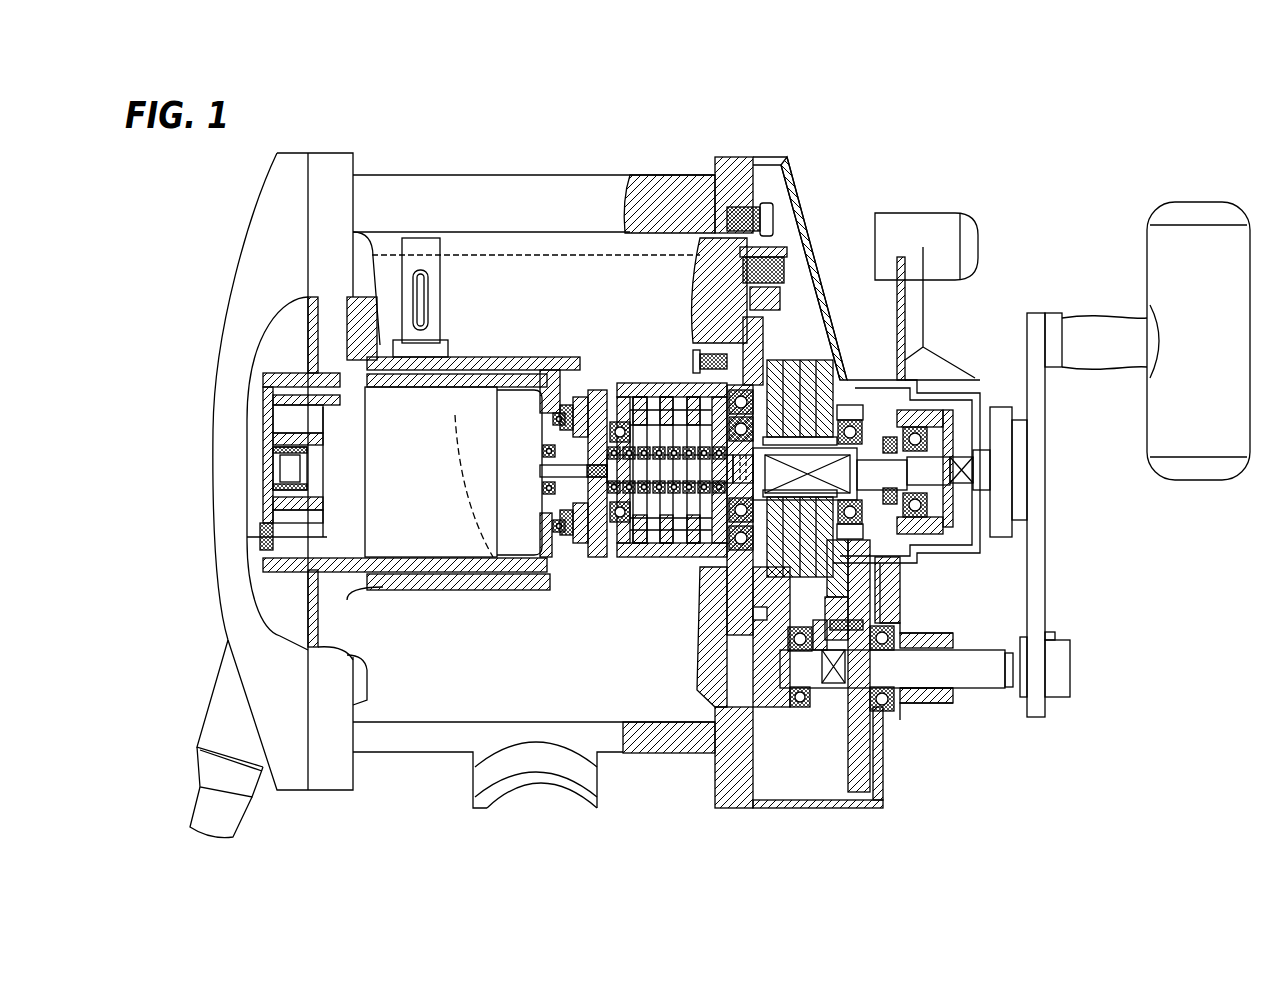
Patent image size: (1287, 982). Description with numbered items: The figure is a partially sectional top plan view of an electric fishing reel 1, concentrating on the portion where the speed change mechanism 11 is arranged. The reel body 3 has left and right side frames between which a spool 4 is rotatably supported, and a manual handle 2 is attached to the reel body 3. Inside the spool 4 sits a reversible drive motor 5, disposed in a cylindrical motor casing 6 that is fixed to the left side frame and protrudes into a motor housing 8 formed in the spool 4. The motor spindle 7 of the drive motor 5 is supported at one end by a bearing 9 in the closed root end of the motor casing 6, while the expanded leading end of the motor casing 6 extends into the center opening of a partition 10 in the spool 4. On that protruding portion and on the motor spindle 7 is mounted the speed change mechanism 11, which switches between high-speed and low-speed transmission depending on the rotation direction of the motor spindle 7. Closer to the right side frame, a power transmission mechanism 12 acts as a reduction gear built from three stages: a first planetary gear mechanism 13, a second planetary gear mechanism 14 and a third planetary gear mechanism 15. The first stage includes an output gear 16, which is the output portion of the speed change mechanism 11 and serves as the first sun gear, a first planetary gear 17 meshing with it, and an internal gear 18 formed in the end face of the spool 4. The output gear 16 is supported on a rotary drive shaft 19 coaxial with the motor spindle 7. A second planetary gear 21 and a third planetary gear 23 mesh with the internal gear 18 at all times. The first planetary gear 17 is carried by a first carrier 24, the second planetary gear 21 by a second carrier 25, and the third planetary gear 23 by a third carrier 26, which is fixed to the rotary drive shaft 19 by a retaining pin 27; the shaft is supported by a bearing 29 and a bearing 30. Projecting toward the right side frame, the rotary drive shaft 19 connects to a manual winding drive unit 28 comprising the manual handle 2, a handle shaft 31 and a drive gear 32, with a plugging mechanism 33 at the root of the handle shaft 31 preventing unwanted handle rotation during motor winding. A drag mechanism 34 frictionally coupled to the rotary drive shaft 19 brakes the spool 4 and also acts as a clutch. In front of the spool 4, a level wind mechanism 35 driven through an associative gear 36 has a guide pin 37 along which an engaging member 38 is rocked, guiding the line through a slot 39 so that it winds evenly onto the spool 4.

The electric fishing reel 1 is at (810, 162).
The manual handle 2 is at (1097, 372).
The reel body 3 is at (730, 155).
The spool 4 is at (525, 360).
The drive motor 5 is at (455, 400).
The motor casing 6 is at (428, 565).
The motor spindle 7 is at (272, 488).
The motor housing 8 is at (455, 588).
The bearing 9 is at (272, 448).
The partition 10 is at (573, 393).
The speed change mechanism 11 is at (570, 570).
The power transmission mechanism 12 is at (805, 383).
The first planetary gear mechanism 13 is at (615, 560).
The second planetary gear mechanism 14 is at (655, 556).
The third planetary gear mechanism 15 is at (693, 553).
The output gear 16 is at (590, 565).
The first planetary gear 17 is at (645, 393).
The internal gear 18 is at (747, 560).
The rotary drive shaft 19 is at (465, 472).
The second planetary gear 21 is at (667, 397).
The third planetary gear 23 is at (700, 397).
The first carrier 24 is at (640, 553).
The second carrier 25 is at (667, 553).
The third carrier 26 is at (707, 553).
The retaining pin 27 is at (820, 365).
The manual winding drive unit 28 is at (1078, 660).
The bearing 29 is at (723, 383).
The bearing 30 is at (897, 560).
The handle shaft 31 is at (930, 670).
The drive gear 32 is at (873, 755).
The plugging mechanism 33 is at (820, 745).
The drag mechanism 34 is at (985, 331).
The level wind mechanism 35 is at (429, 219).
The associative gear 36 is at (775, 250).
The guide pin 37 is at (520, 248).
The engaging member 38 is at (410, 245).
The slot 39 is at (420, 300).